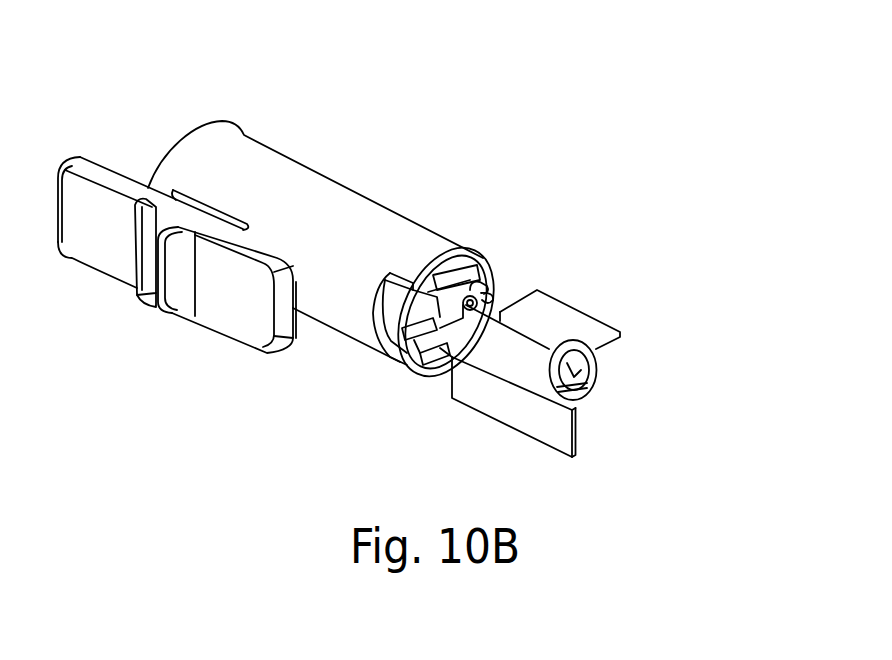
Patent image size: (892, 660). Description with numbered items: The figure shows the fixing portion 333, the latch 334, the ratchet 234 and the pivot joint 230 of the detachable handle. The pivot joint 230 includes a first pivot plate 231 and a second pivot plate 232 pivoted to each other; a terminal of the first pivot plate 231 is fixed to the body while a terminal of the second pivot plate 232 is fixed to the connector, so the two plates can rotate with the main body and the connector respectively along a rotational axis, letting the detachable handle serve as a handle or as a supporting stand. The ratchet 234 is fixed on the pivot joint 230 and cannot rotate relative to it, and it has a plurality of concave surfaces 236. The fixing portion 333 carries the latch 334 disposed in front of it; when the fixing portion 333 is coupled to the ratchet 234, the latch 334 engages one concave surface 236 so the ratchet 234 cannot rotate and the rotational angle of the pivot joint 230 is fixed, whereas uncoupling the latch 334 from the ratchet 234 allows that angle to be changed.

The pivot joint 230 is at (609, 318).
The first pivot plate 231 is at (707, 353).
The second pivot plate 232 is at (597, 335).
The ratchet 234 is at (458, 278).
The concave surface 236 is at (410, 350).
The fixing portion 333 is at (203, 152).
The latch 334 is at (406, 285).